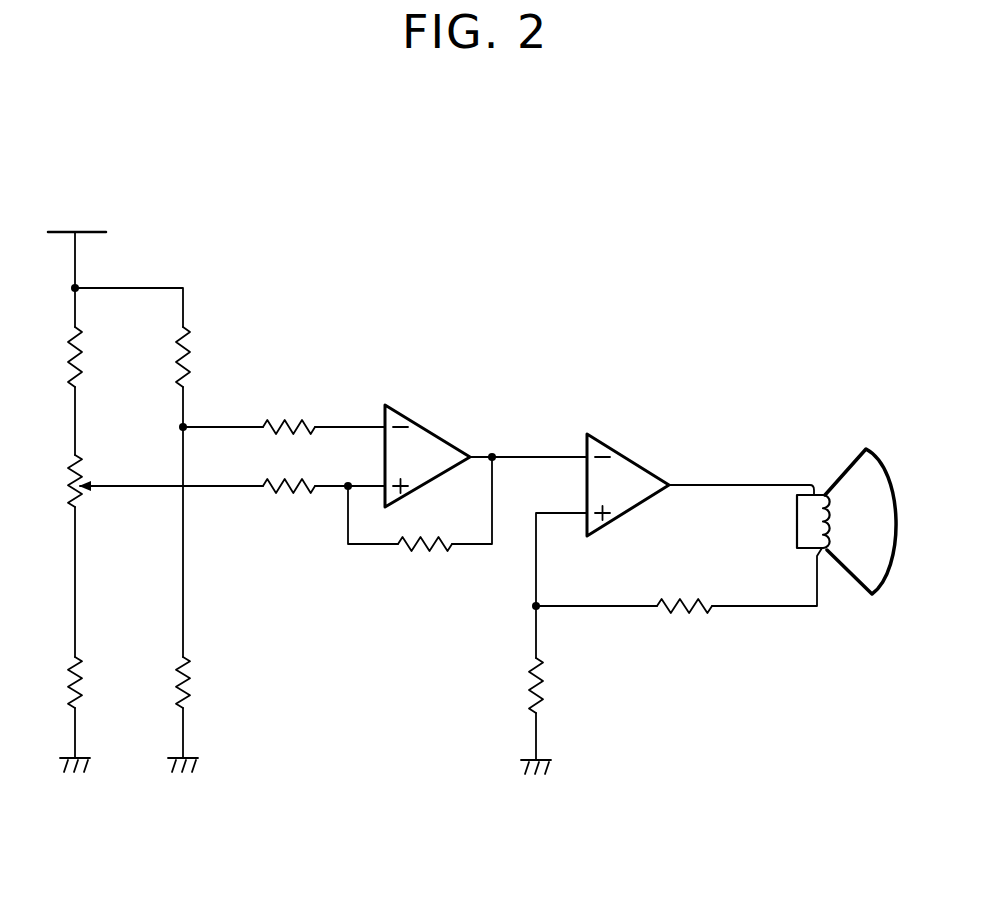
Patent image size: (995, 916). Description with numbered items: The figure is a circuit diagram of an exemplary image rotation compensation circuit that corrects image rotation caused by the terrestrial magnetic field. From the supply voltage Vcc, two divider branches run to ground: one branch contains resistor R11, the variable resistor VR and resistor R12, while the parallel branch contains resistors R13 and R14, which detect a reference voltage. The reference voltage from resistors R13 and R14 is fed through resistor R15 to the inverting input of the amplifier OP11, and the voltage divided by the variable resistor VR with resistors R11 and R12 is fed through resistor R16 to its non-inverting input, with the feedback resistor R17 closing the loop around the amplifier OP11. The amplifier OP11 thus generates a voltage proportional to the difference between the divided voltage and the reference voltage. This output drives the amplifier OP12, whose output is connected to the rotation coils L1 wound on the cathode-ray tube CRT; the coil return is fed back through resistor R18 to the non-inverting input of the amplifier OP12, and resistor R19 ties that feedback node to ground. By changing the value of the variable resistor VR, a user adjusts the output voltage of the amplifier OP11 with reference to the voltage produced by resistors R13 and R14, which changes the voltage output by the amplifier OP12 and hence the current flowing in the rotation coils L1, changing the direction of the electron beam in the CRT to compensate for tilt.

The supply voltage Vcc is at (77, 217).
The resistor R11 is at (105, 357).
The resistor R12 is at (105, 682).
The resistor R13 is at (213, 357).
The resistor R14 is at (213, 682).
The resistor R15 is at (289, 412).
The resistor R16 is at (289, 469).
The feedback resistor R17 is at (425, 528).
The feedback resistor R18 is at (684, 590).
The resistor R19 is at (564, 685).
The variable resistor VR is at (97, 481).
The amplifier OP11 is at (430, 430).
The amplifier OP12 is at (633, 459).
The rotation coils L1 is at (808, 498).
The cathode-ray tube CRT is at (871, 490).